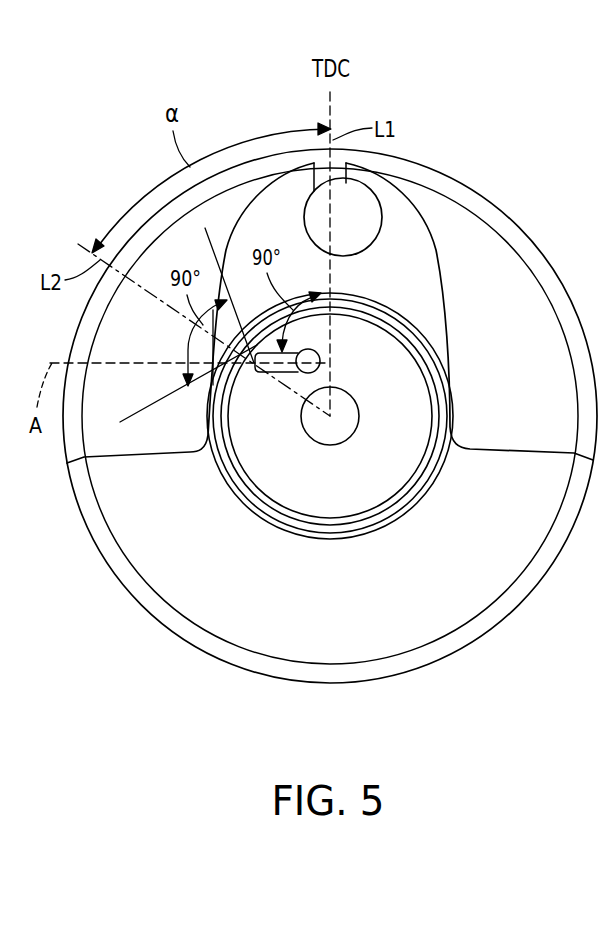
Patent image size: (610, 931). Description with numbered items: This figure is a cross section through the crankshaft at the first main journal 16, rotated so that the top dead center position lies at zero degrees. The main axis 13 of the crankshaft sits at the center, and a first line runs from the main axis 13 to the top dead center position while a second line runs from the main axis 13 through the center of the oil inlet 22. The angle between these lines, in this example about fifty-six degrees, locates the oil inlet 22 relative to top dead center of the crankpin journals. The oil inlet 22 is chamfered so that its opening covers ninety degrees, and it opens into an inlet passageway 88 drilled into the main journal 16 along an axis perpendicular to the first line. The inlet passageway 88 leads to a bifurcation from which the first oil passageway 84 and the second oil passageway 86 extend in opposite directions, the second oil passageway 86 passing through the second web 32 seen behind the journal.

The main axis 13 is at (330, 416).
The first main journal 16 is at (432, 405).
The oil inlet 22 is at (224, 425).
The second web 32 is at (428, 253).
The first oil passageway 84 is at (347, 362).
The second oil passageway 86 is at (314, 352).
The inlet passageway 88 is at (290, 373).